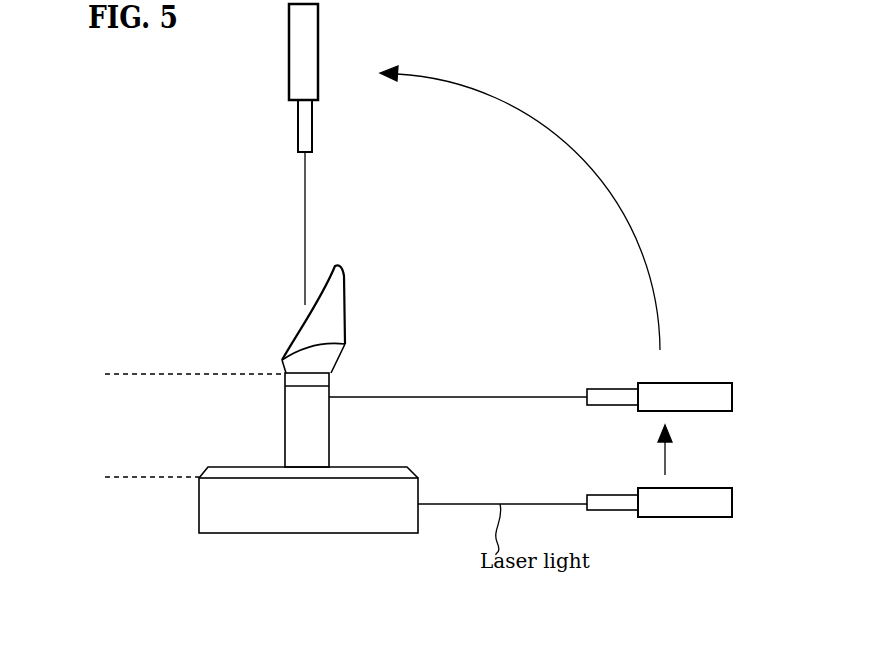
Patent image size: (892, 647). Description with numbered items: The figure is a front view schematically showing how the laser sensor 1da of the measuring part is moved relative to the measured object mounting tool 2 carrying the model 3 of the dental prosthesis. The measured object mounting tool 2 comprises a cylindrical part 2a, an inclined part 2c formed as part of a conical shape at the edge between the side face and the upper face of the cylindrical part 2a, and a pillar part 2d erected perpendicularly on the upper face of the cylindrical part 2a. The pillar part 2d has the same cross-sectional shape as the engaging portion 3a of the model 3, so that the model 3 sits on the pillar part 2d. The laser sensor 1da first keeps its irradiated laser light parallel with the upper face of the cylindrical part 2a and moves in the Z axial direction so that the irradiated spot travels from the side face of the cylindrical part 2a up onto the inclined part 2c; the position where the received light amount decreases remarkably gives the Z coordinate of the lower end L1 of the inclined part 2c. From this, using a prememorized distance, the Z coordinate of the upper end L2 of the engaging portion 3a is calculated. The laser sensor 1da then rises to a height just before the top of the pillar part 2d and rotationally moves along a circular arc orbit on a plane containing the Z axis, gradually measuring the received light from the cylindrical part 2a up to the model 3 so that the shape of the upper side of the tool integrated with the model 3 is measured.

The model of the dental prosthesis 3 is at (286, 293).
The engaging portion 3a is at (331, 379).
The measured object mounting tool 2 is at (264, 493).
The cylindrical part 2a is at (220, 517).
The inclined part 2c is at (204, 468).
The pillar part 2d is at (292, 424).
The laser sensor 1da is at (732, 503).
The lower end of the inclined part L1 is at (134, 479).
The upper end of the engaging portion L2 is at (177, 376).